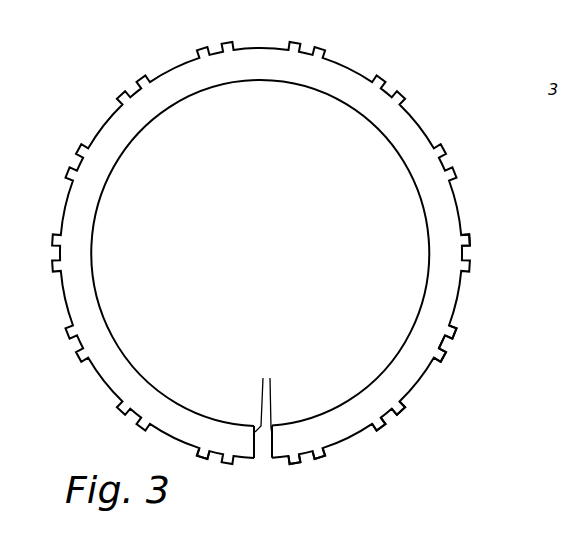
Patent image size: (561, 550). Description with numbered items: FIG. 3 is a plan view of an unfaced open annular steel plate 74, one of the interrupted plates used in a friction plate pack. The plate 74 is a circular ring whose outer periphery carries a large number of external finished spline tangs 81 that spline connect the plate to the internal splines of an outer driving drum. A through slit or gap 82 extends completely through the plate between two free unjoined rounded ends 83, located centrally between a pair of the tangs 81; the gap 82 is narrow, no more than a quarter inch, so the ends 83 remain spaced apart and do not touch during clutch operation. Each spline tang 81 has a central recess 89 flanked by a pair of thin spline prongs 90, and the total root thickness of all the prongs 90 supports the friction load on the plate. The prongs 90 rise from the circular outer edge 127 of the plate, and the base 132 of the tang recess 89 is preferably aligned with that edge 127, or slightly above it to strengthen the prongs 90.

The open annular steel plate 74 is at (350, 426).
The finished spline tang 81 is at (452, 352).
The slit or gap 82 is at (260, 446).
The rounded free end 83 is at (265, 397).
The spline tang recess 89 is at (384, 417).
The finished spline prong 90 is at (398, 406).
The circular outer edge 127 is at (331, 461).
The base of spline tang recess 132 is at (444, 343).